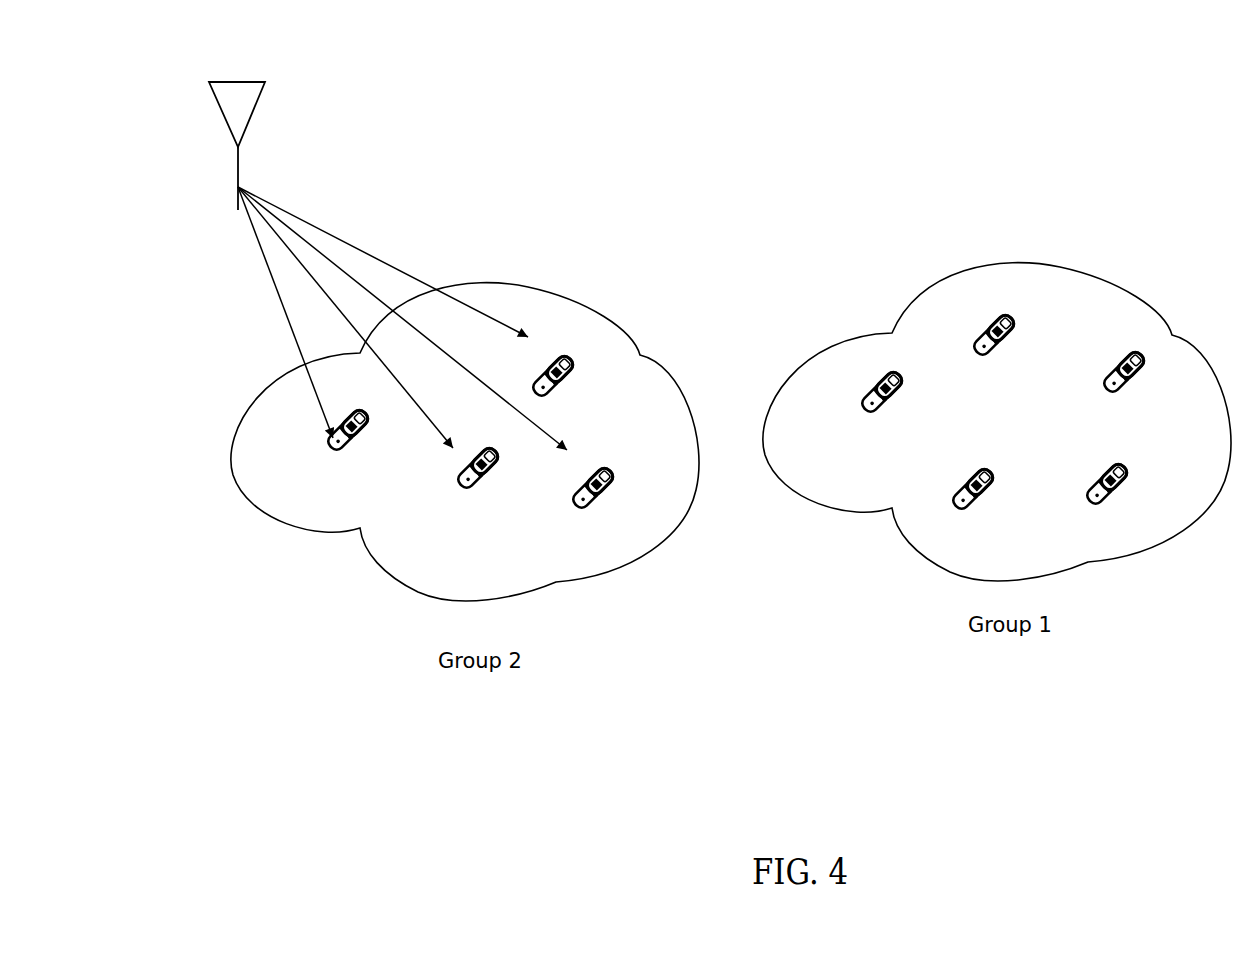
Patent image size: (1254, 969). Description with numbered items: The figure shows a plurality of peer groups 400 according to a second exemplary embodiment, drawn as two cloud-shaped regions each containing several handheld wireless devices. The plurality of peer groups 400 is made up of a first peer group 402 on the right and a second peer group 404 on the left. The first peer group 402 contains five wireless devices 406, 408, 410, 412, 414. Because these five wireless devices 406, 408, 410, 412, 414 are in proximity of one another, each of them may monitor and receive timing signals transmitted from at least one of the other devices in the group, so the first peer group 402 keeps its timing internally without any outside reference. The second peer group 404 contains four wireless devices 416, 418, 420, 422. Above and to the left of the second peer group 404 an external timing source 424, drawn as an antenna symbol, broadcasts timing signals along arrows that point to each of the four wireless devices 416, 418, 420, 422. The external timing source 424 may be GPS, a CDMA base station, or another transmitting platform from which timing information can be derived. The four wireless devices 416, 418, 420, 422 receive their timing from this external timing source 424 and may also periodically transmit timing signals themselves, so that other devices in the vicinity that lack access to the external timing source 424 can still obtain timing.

The plurality of peer groups 400 is at (876, 83).
The Group 1 peer group 402 is at (1085, 273).
The Group 2 peer group 404 is at (497, 282).
The wireless device 406 is at (1007, 313).
The wireless device 408 is at (897, 370).
The wireless device 410 is at (987, 468).
The wireless device 412 is at (1118, 463).
The wireless device 414 is at (1133, 348).
The wireless device 416 is at (562, 351).
The wireless device 418 is at (607, 463).
The wireless device 420 is at (377, 398).
The wireless device 422 is at (500, 430).
The external timing source 424 is at (238, 82).